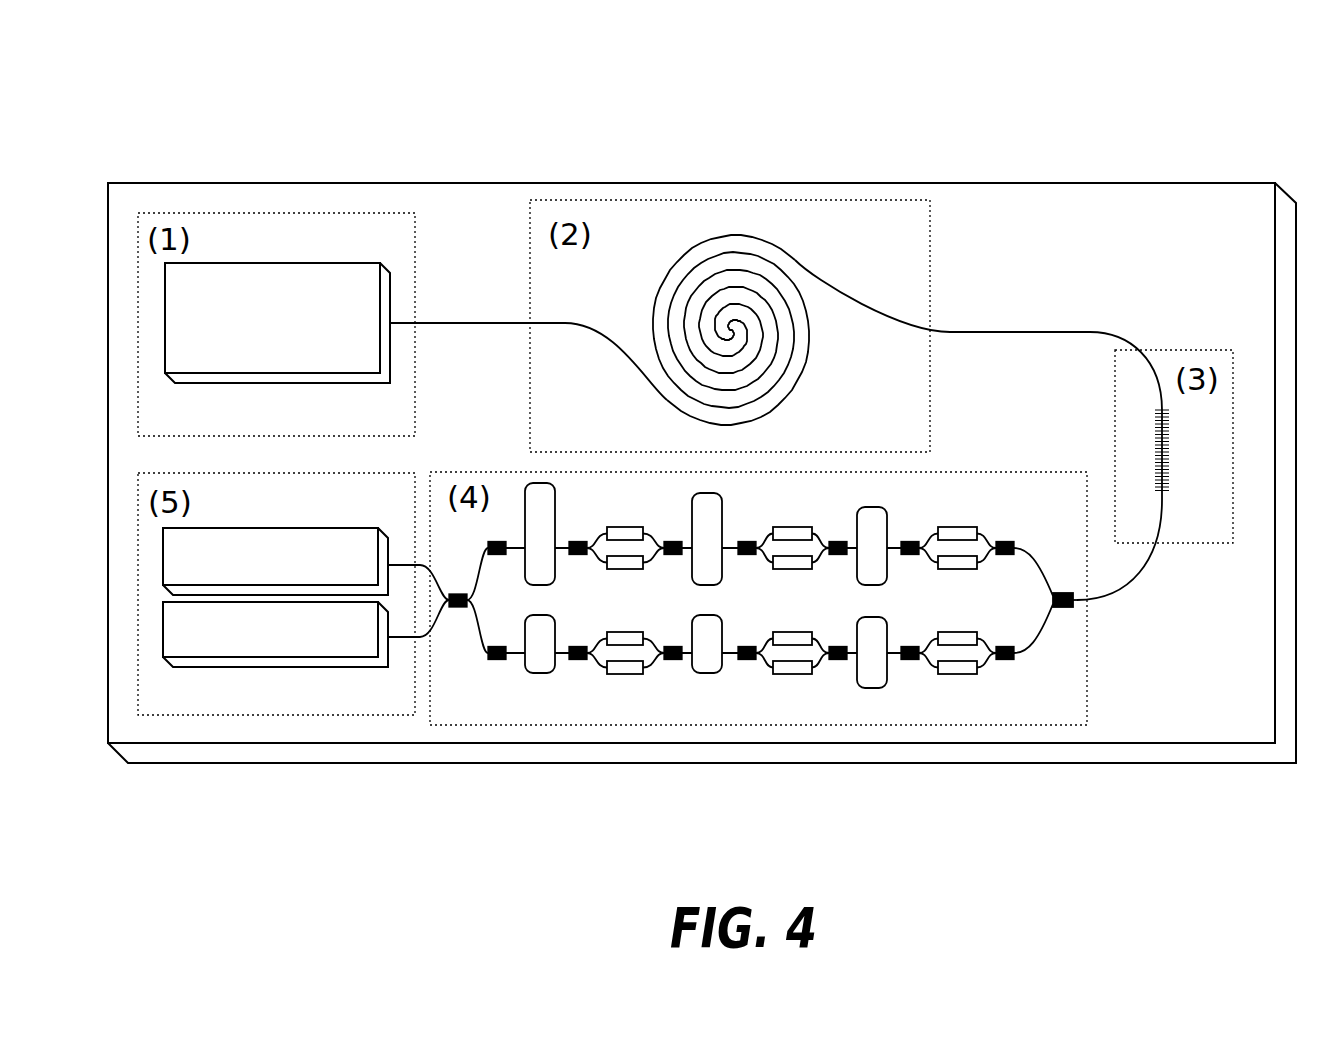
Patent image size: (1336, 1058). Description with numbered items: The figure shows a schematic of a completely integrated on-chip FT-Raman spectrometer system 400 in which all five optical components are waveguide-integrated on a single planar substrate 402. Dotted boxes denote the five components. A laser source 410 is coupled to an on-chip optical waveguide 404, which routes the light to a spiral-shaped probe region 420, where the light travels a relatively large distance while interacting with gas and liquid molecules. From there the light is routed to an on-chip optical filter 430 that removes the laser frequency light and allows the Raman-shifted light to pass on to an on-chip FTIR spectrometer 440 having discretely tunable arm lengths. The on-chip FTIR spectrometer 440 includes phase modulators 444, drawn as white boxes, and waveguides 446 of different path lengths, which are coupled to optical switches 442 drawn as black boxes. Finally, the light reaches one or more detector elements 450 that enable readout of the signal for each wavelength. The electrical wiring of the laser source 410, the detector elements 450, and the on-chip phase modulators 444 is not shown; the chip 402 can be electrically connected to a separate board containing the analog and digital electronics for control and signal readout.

The integrated on-chip FT-Raman spectrometer system 400 is at (1152, 167).
The planar substrate 402 is at (691, 463).
The on-chip optical waveguide 404 is at (776, 430).
The laser source 410 is at (277, 323).
The spiral-shaped probe region 420 is at (760, 333).
The on-chip optical filter 430 is at (1194, 474).
The on-chip FTIR spectrometer 440 is at (762, 661).
The optical switches 442 is at (492, 662).
The phase modulators 444 is at (783, 668).
The waveguides of different path lengths 446 is at (533, 673).
The detector elements 450 is at (306, 621).